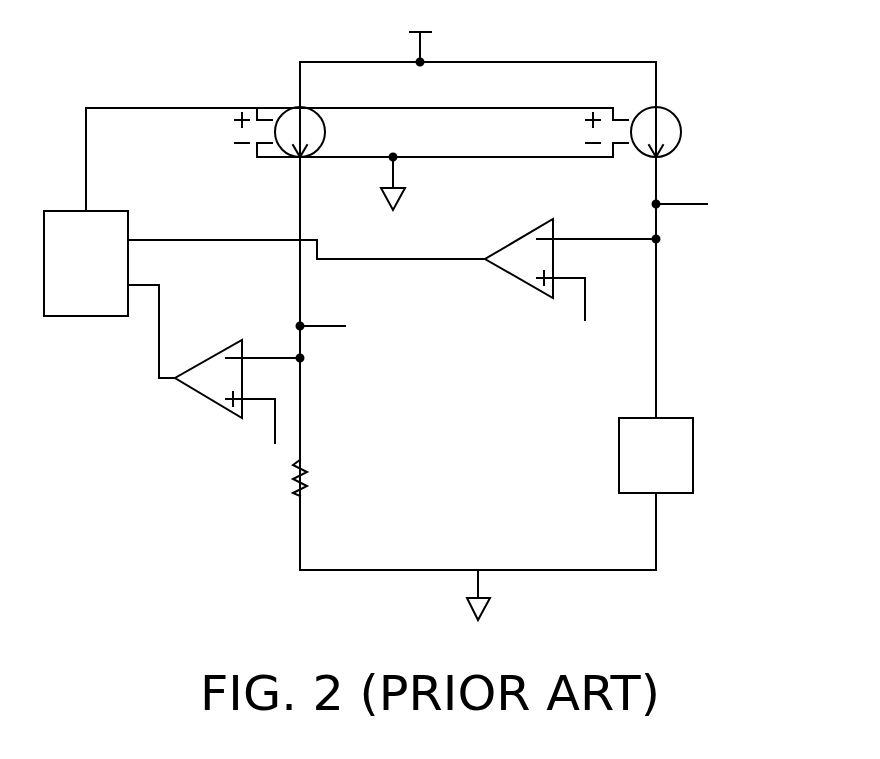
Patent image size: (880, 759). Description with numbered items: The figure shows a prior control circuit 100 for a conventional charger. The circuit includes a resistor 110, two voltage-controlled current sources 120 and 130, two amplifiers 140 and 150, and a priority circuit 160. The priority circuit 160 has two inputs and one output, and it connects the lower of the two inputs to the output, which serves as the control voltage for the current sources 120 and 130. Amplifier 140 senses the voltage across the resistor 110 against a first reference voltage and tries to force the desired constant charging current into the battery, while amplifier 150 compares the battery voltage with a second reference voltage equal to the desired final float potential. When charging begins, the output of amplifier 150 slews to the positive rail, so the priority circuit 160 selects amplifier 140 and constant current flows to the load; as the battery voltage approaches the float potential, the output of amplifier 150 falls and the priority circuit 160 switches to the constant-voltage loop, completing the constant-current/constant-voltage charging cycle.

The load driving circuit 100 is at (755, 621).
The resistor 110 is at (305, 463).
The voltage-controlled current source 120 is at (278, 115).
The voltage-controlled current source 130 is at (672, 112).
The amplifier 140 is at (212, 357).
The amplifier 150 is at (521, 238).
The priority circuit 160 is at (110, 317).